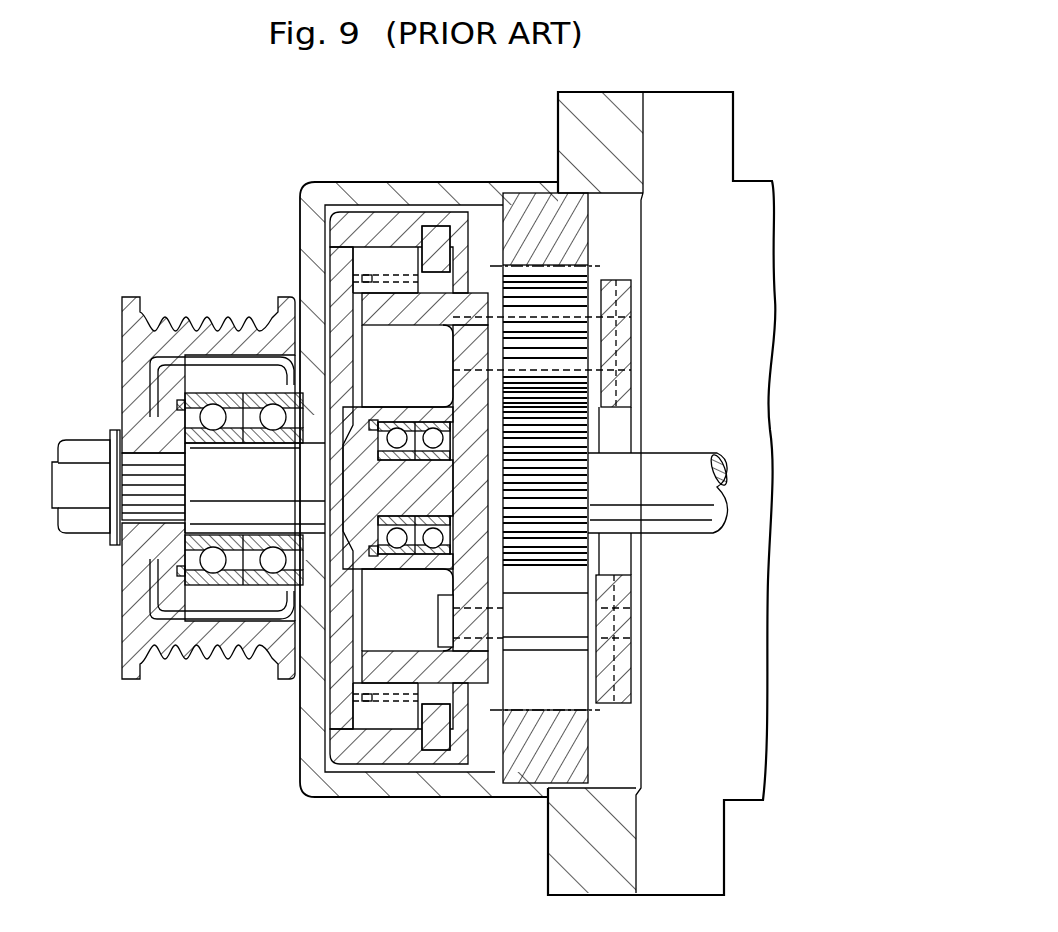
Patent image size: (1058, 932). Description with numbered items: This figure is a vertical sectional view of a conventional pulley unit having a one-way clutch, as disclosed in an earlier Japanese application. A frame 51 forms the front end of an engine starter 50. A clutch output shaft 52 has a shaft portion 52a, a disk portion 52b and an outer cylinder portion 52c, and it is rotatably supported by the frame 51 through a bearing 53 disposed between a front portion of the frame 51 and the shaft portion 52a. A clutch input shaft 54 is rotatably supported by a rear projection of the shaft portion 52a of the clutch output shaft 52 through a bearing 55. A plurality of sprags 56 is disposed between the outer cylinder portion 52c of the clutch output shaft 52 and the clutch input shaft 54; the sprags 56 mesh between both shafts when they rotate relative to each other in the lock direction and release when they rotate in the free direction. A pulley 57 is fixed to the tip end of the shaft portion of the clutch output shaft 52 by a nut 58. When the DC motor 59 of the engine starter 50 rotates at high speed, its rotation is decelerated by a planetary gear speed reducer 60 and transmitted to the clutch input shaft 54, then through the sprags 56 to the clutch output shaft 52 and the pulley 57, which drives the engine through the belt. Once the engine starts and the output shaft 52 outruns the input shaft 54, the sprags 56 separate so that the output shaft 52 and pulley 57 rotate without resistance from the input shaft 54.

The engine starter 50 is at (703, 92).
The frame 51 is at (402, 190).
The clutch output shaft 52 is at (263, 512).
The shaft portion 52a is at (208, 512).
The disk portion 52b is at (333, 668).
The outer cylinder portion 52c is at (407, 750).
The bearing 53 is at (207, 547).
The clutch input shaft 54 is at (477, 673).
The bearing 55 is at (402, 555).
The sprags 56 is at (387, 720).
The pulley 57 is at (162, 320).
The nut 58 is at (83, 452).
The DC motor 59 is at (678, 470).
The planetary gear speed reducer 60 is at (567, 343).